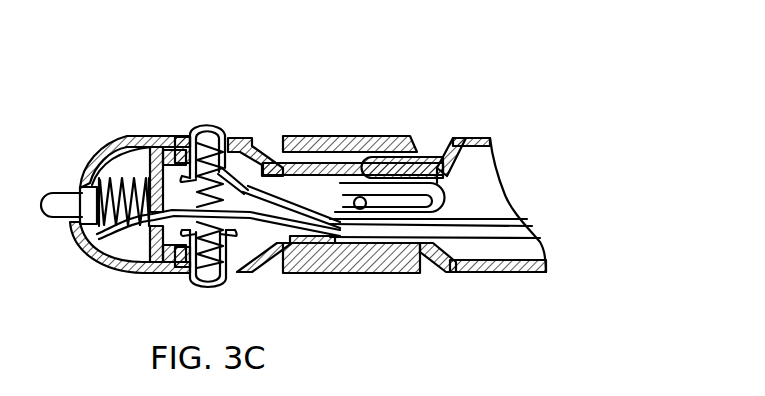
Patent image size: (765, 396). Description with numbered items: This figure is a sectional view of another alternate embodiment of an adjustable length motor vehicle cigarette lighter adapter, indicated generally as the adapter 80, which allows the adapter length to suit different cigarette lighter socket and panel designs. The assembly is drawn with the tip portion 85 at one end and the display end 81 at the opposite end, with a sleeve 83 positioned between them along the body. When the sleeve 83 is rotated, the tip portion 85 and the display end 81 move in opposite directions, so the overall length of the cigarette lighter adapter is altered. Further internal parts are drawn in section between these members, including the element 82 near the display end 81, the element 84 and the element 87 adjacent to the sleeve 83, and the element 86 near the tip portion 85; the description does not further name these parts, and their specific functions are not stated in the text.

The connector assembly 80 is at (612, 151).
The display end 81 is at (480, 136).
The loop contact 82 is at (400, 203).
The sleeve 83 is at (374, 135).
The support bar 84 is at (303, 136).
The tip portion 85 is at (256, 137).
The spring clip 86 is at (238, 125).
The lower housing block 87 is at (372, 255).